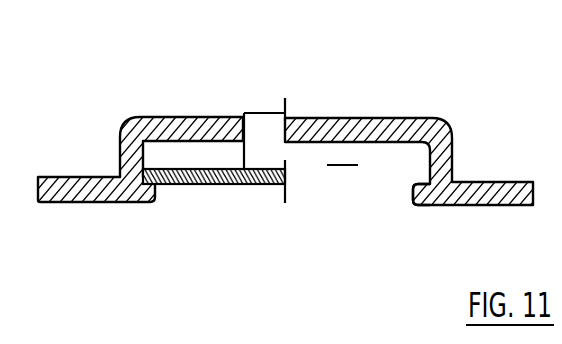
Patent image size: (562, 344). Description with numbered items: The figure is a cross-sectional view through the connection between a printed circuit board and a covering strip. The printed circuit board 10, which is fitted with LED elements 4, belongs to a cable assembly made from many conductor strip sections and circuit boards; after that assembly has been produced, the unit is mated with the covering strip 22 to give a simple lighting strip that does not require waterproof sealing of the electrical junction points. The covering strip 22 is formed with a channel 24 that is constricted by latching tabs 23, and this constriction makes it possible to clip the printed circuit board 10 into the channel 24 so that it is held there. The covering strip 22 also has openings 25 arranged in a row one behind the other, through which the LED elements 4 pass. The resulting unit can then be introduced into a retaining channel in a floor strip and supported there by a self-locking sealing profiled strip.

The opening 25 is at (237, 117).
The LED element 4 is at (263, 127).
The covering strip 22 is at (445, 122).
The printed circuit board 10 is at (181, 184).
The channel 24 is at (342, 165).
The latching tab 23 is at (413, 197).